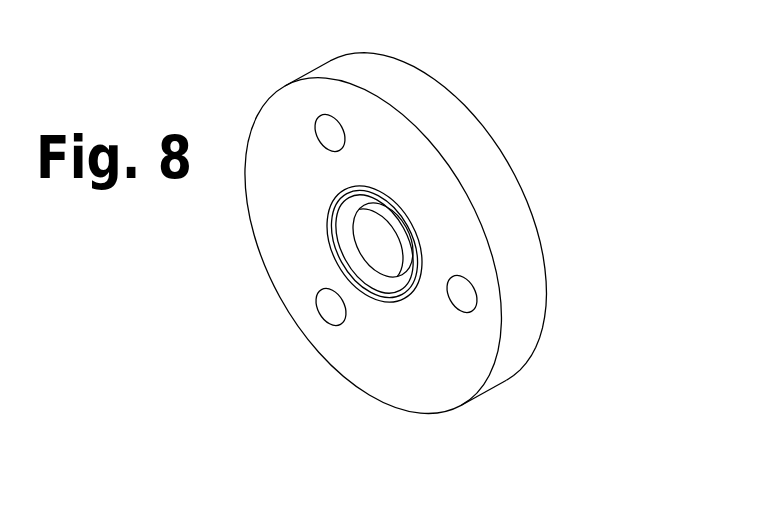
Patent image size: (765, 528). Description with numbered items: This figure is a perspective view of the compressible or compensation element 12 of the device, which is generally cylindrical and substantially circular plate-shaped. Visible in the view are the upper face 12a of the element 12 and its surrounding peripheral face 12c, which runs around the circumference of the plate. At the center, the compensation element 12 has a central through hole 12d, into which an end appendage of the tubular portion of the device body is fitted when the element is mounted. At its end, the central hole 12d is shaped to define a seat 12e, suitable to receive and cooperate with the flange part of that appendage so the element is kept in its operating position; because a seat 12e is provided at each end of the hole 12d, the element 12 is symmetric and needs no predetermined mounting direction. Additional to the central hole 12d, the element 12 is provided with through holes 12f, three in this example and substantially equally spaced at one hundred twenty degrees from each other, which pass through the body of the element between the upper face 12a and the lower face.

The compensation element 12 is at (541, 153).
The upper face 12a is at (443, 383).
The peripheral face 12c is at (528, 259).
The central through hole 12d is at (363, 241).
The seat 12e is at (394, 296).
The through holes 12f is at (332, 130).